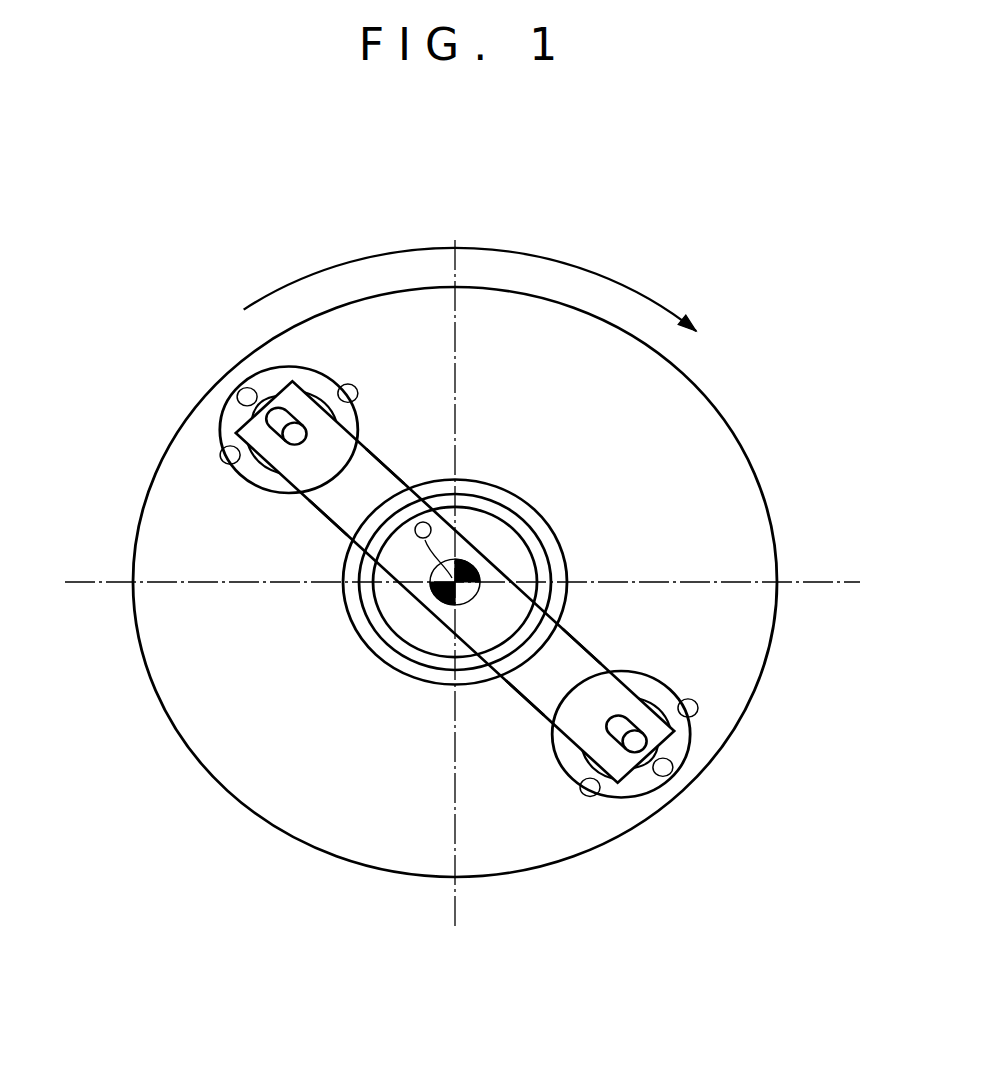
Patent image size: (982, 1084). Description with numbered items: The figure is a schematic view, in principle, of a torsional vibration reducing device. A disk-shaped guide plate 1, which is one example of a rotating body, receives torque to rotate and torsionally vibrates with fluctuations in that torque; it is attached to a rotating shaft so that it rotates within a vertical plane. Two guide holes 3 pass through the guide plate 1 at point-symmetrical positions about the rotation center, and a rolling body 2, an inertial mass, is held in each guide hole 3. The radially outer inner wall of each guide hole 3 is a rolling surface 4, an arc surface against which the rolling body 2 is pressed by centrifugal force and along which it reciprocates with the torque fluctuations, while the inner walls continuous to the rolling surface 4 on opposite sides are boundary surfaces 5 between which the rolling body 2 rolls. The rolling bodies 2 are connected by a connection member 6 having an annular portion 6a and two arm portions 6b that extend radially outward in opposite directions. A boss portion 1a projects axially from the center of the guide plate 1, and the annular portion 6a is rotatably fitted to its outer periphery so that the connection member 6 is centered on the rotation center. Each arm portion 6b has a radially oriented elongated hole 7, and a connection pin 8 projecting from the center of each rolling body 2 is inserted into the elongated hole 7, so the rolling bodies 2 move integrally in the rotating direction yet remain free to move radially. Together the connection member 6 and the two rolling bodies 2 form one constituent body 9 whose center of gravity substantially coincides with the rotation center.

The guide plate 1 is at (722, 418).
The boss portion 1a is at (497, 642).
The rolling body 2 is at (327, 400).
The guide hole 3 is at (250, 478).
The rolling surface 4 is at (240, 403).
The boundary surface 5 is at (357, 400).
The connection member 6 is at (583, 637).
The annular portion 6a is at (543, 524).
The arm portion 6b is at (322, 511).
The elongated hole 7 is at (287, 410).
The connection pin 8 is at (293, 447).
The constituent body 9 is at (522, 700).